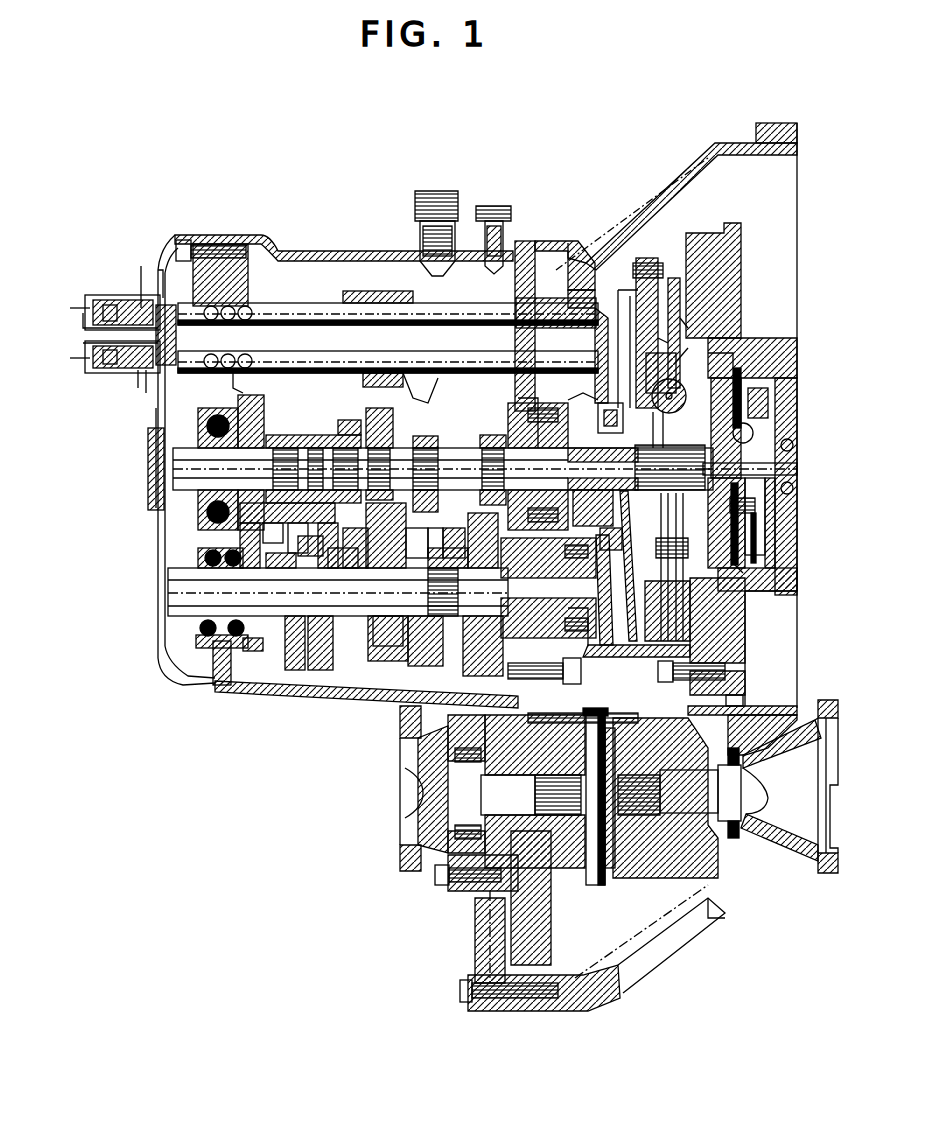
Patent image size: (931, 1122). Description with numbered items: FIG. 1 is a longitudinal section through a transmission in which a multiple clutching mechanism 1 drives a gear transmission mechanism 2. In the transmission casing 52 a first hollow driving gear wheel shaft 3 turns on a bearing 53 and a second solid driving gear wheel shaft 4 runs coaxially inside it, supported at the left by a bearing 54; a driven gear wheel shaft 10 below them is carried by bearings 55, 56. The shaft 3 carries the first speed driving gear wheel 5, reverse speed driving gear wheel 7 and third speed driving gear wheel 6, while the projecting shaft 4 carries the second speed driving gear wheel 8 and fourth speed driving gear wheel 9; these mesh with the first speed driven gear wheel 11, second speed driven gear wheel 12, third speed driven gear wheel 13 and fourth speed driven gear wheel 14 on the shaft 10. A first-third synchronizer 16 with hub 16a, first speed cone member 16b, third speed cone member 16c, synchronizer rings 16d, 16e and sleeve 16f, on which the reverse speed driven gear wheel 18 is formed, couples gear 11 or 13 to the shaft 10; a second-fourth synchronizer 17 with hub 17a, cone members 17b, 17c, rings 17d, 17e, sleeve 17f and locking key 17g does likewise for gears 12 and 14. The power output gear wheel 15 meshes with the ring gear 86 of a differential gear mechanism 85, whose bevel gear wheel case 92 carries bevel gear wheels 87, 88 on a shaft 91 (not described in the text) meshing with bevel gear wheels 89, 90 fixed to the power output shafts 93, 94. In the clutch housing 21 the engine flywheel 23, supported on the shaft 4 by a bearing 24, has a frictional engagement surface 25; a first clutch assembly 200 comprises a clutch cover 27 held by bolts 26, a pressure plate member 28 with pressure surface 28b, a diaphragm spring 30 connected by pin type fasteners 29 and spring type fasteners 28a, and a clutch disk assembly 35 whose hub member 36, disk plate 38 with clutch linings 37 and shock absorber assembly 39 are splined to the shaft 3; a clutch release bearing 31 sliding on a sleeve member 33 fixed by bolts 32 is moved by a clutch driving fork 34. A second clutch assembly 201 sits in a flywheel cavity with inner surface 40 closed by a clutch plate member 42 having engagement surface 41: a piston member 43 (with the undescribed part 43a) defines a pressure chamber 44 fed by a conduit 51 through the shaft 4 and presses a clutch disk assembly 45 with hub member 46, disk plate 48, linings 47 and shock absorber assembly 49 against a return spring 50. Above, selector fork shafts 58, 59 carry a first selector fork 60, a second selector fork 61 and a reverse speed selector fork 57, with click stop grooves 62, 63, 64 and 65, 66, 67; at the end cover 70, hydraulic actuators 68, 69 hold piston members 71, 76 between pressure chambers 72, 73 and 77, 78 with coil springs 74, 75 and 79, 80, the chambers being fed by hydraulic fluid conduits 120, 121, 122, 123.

The multiple clutching mechanism 1 is at (760, 300).
The gear transmission mechanism 2 is at (312, 640).
The first hollow driving gear wheel shaft 3 is at (447, 438).
The second solid driving gear wheel shaft 4 is at (325, 432).
The first speed driving gear wheel 5 is at (480, 427).
The third speed driving gear wheel 6 is at (368, 400).
The reverse speed driving gear wheel 7 is at (413, 428).
The second speed driving gear wheel 8 is at (338, 412).
The fourth speed driving gear wheel 9 is at (256, 392).
The driven gear wheel shaft 10 is at (232, 610).
The first speed driven gear wheel 11 is at (478, 670).
The second speed driven gear wheel 12 is at (330, 658).
The third speed driven gear wheel 13 is at (388, 645).
The fourth speed driven gear wheel 14 is at (246, 643).
The power output gear wheel 15 is at (521, 535).
The first-third synchronizer 16 is at (375, 678).
The hub 16a is at (454, 582).
The first speed cone member 16b is at (489, 536).
The third speed cone member 16c is at (383, 501).
The synchronizer ring 16d is at (465, 525).
The synchronizer ring 16e is at (409, 532).
The first-third synchronizer sleeve 16f is at (443, 527).
The second-fourth synchronizer 17 is at (272, 653).
The hub 17a is at (362, 540).
The second speed cone member 17b is at (355, 548).
The fourth speed cone member 17c is at (270, 557).
The synchronizer ring 17d is at (322, 528).
The synchronizer ring 17e is at (278, 523).
The second-fourth synchronizer sleeve 17f is at (307, 527).
The locking key 17g is at (305, 648).
The reverse speed driven gear wheel 18 is at (420, 664).
The clutch housing 21 is at (662, 185).
The engine flywheel 23 is at (728, 278).
The bearing 24 is at (786, 436).
The frictional engagement surface 25 is at (672, 285).
The bolts 26 is at (660, 666).
The clutch cover 27 is at (642, 663).
The pressure plate member 28 is at (635, 290).
The spring type fasteners 28a is at (624, 290).
The pressure surface 28b is at (675, 298).
The pin type fasteners 29 is at (658, 373).
The diaphragm spring 30 is at (650, 333).
The clutch release bearing 31 is at (601, 400).
The bolts 32 is at (512, 392).
The sleeve member 33 is at (575, 482).
The clutch driving fork 34 is at (583, 392).
The clutch disk assembly 35 is at (693, 346).
The hub member 36 is at (650, 425).
The clutch linings 37 is at (695, 326).
The disk plate 38 is at (660, 336).
The shock absorber assembly 39 is at (675, 384).
The cylindrical inner surface 40 is at (727, 355).
The frictional engagement surface 41 is at (746, 398).
The clutch plate member 42 is at (732, 575).
The piston member 43 is at (755, 553).
The flange 43a is at (722, 399).
The pressure chamber 44 is at (770, 525).
The clutch disk assembly 45 is at (752, 412).
The hub member 46 is at (690, 437).
The clutch linings 47 is at (725, 524).
The disk plate 48 is at (747, 520).
The shock absorber assembly 49 is at (740, 415).
The return spring 50 is at (744, 562).
The hydraulic fluid conduit 51 is at (791, 461).
The transmission casing 52 is at (341, 245).
The bearing 53 is at (508, 402).
The bearing 54 is at (196, 412).
The bearing 55 is at (590, 615).
The bearing 56 is at (190, 628).
The reverse speed selector fork 57 is at (455, 295).
The first selector fork shaft 58 is at (306, 366).
The second selector fork shaft 59 is at (372, 300).
The first selector fork 60 is at (432, 390).
The second selector fork 61 is at (312, 295).
The click stop groove 62 is at (249, 382).
The click stop groove 63 is at (200, 346).
The click stop groove 64 is at (238, 346).
The click stop groove 65 is at (226, 298).
The click stop groove 66 is at (200, 298).
The click stop groove 67 is at (240, 298).
The first hydraulic actuator 68 is at (124, 366).
The second hydraulic actuator 69 is at (128, 292).
The end cover 70 is at (146, 420).
The first piston member 71 is at (110, 362).
The pressure chamber 72 is at (98, 360).
The pressure chamber 73 is at (130, 362).
The compression coil spring 74 is at (76, 336).
The compression coil spring 75 is at (138, 386).
The second piston member 76 is at (122, 282).
The pressure chamber 77 is at (100, 296).
The pressure chamber 78 is at (164, 277).
The compression coil spring 79 is at (75, 316).
The compression coil spring 80 is at (167, 335).
The differential gear mechanism 85 is at (583, 895).
The differential power input ring gear 86 is at (545, 645).
The bevel gear wheel 87 is at (625, 715).
The bevel gear wheel 88 is at (615, 860).
The bevel gear wheel 89 is at (663, 840).
The bevel gear wheel 90 is at (601, 799).
The pinion shaft 91 is at (600, 872).
The bevel gear wheel case 92 is at (547, 898).
The left power output shaft 93 is at (686, 794).
The right power output shaft 94 is at (501, 794).
The hydraulic fluid conduit 120 is at (66, 350).
The hydraulic fluid conduit 121 is at (64, 298).
The hydraulic fluid conduit 122 is at (130, 382).
The hydraulic fluid conduit 123 is at (152, 262).
The first clutch assembly 200 is at (702, 222).
The second clutch assembly 201 is at (748, 590).